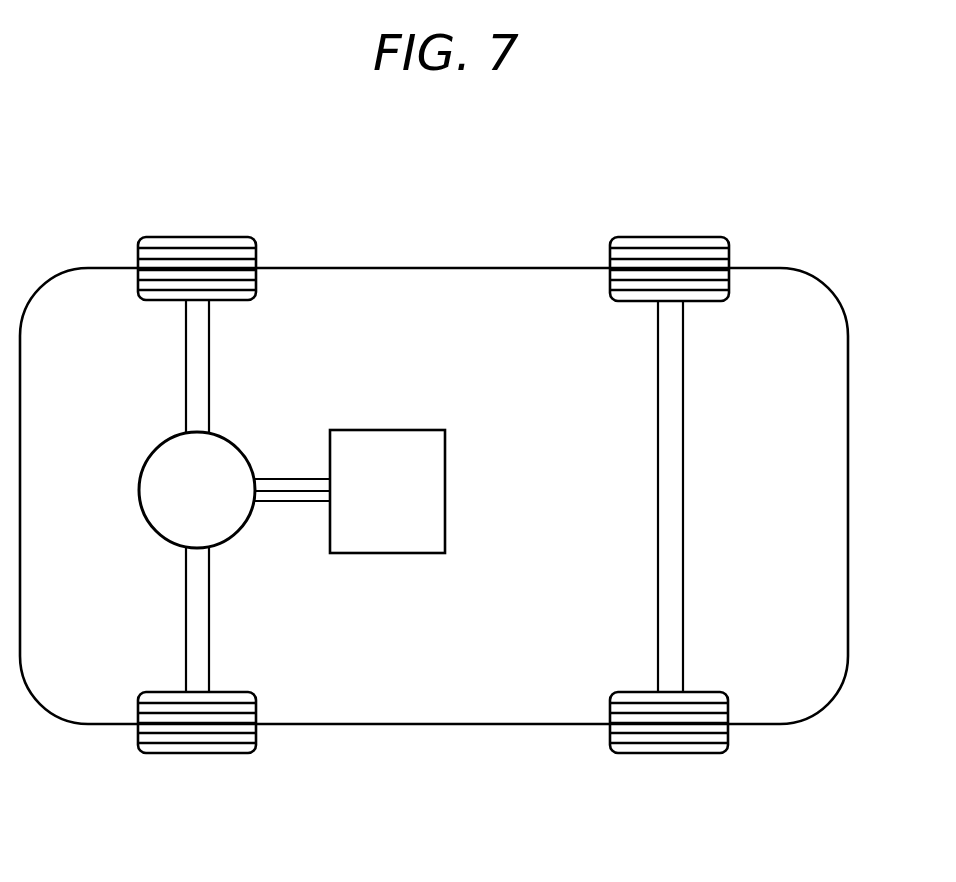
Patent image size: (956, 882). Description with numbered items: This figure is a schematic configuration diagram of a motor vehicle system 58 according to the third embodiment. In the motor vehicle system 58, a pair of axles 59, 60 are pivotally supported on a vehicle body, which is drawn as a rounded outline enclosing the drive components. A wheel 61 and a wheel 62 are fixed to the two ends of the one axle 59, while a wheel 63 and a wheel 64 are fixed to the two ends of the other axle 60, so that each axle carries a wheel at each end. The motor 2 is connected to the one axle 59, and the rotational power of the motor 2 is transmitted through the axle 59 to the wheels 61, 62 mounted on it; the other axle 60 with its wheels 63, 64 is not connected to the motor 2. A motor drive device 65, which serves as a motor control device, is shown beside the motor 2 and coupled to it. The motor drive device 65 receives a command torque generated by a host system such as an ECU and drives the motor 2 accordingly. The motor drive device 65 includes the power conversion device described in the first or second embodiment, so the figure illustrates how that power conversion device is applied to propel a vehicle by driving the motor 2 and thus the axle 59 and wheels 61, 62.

The motor 2 is at (232, 442).
The motor vehicle system 58 is at (355, 268).
The axle 59 is at (210, 655).
The axle 60 is at (684, 475).
The wheel 61 is at (257, 238).
The wheel 62 is at (198, 753).
The wheel 63 is at (728, 238).
The wheel 64 is at (672, 753).
The motor drive device 65 is at (448, 462).